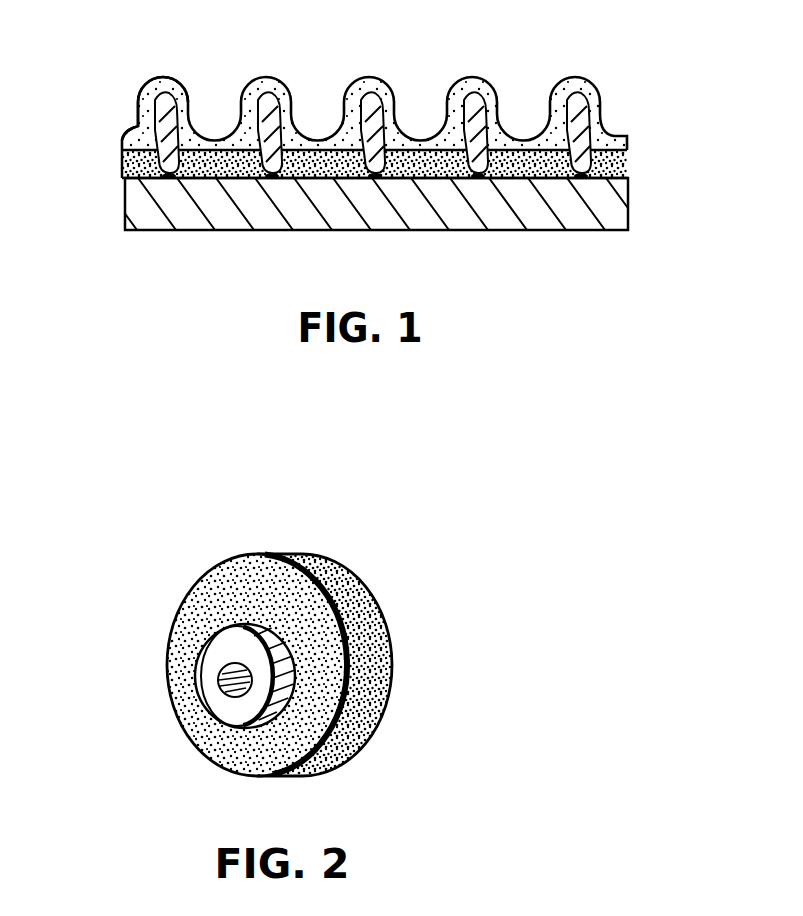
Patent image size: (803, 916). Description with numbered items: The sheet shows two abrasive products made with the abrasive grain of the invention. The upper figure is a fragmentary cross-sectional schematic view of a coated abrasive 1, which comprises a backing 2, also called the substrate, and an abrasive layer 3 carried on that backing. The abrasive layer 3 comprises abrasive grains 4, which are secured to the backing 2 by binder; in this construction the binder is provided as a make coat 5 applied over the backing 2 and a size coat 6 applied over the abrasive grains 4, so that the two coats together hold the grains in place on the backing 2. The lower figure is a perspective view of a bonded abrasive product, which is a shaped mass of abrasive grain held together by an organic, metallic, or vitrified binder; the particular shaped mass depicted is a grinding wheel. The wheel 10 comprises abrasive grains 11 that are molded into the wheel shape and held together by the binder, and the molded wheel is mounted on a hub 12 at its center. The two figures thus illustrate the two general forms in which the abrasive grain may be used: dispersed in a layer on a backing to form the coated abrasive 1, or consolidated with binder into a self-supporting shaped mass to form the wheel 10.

In FIG. 1, the coated abrasive 1 is at (607, 48).
In FIG. 1, the backing 2 is at (213, 215).
In FIG. 1, the abrasive layer 3 is at (638, 147).
In FIG. 1, the abrasive grains 4 is at (267, 92).
In FIG. 1, the make coat 5 is at (120, 163).
In FIG. 1, the size coat 6 is at (138, 132).
In FIG. 2, the wheel 10 is at (435, 610).
In FIG. 2, the abrasive grains 11 is at (348, 572).
In FIG. 2, the hub 12 is at (215, 702).